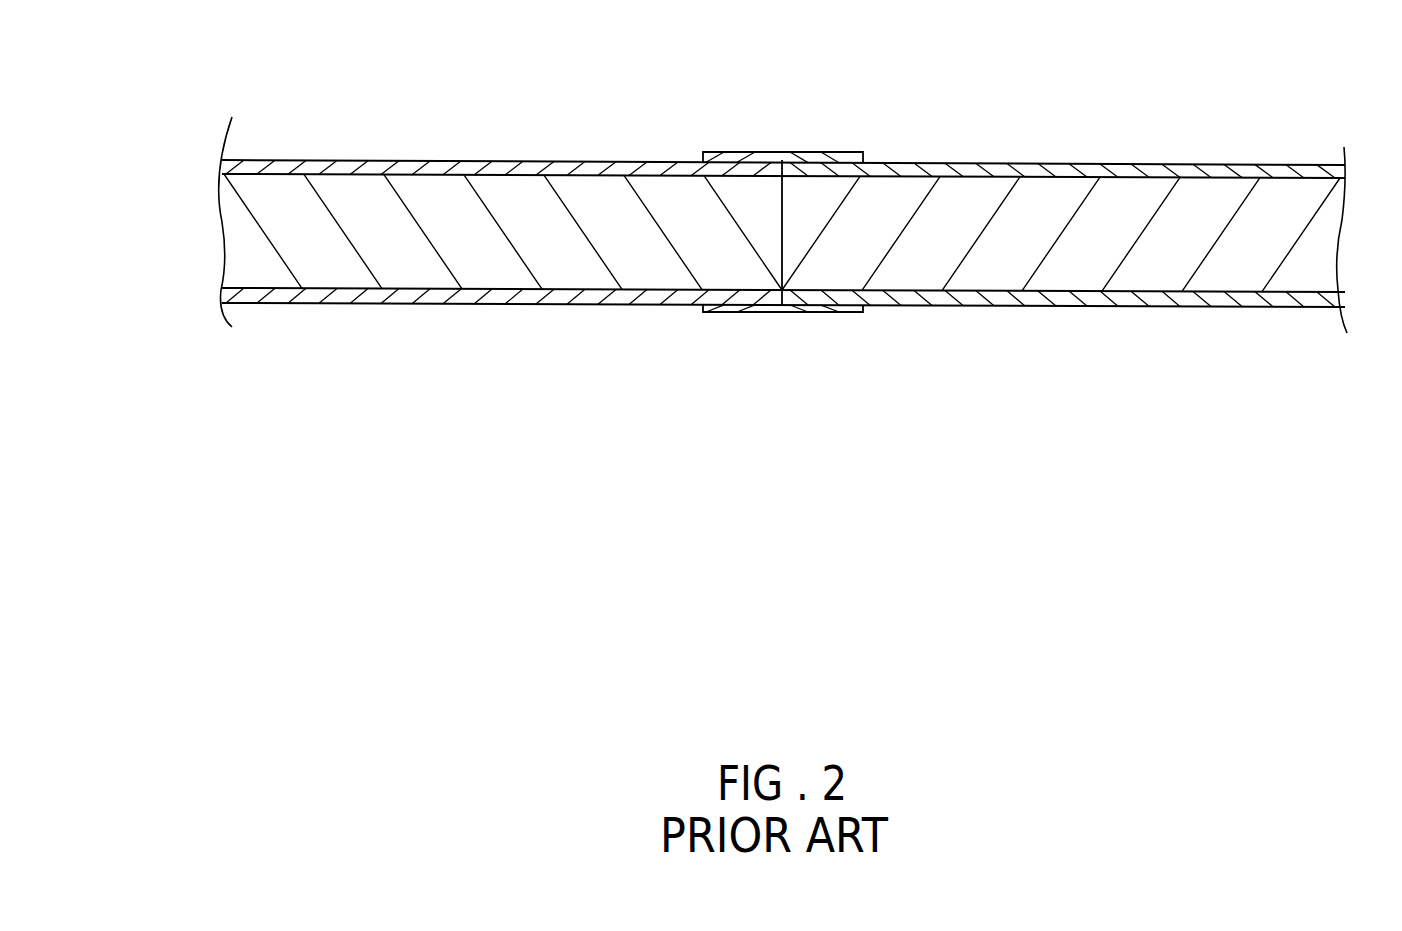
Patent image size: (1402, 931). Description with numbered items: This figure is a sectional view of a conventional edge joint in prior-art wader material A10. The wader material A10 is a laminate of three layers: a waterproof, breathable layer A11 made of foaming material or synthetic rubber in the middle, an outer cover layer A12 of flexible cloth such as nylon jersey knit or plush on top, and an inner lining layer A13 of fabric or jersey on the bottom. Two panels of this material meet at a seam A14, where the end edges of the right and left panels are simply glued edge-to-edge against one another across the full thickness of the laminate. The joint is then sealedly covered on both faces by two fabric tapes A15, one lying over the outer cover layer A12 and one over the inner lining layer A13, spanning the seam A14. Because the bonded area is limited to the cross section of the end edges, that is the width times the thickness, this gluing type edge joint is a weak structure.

The conventional wader material A10 is at (215, 345).
The waterproof, breathable layer A11 is at (240, 243).
The outer cover layer A12 is at (357, 170).
The inner lining layer A13 is at (498, 295).
The seam A14 is at (838, 368).
The fabric tapes A15 is at (800, 155).